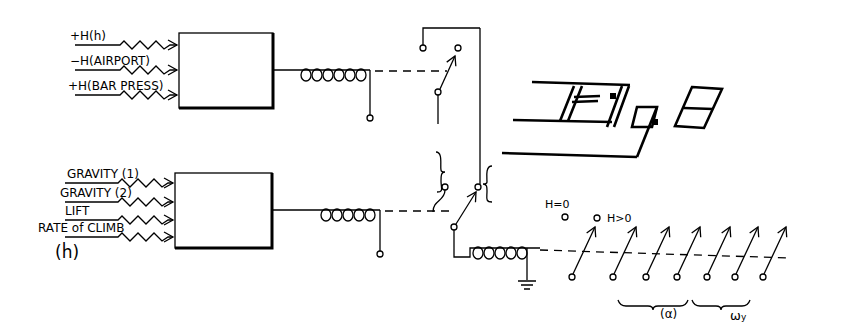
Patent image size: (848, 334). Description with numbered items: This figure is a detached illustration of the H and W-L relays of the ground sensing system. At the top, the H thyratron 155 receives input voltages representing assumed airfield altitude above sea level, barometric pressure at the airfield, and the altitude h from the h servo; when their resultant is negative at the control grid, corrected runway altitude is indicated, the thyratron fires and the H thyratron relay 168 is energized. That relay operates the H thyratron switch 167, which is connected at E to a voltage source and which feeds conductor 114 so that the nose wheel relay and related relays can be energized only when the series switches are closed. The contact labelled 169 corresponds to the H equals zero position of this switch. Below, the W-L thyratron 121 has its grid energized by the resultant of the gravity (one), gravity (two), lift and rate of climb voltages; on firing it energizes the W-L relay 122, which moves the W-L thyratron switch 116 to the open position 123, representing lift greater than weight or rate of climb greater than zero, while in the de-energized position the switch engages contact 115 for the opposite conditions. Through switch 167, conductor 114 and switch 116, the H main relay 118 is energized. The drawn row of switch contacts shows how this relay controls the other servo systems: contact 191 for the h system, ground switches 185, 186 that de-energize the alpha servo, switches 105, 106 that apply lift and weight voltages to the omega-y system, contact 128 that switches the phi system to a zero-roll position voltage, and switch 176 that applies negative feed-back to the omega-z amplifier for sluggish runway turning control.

The H thyratron 155 is at (269, 33).
The H thyratron relay 168 is at (359, 56).
The contact H=0 169 is at (422, 42).
The H thyratron switch 167 is at (444, 76).
The conductor 114 is at (481, 67).
The W-L thyratron 121 is at (250, 173).
The W-L relay 122 is at (368, 205).
The open position 123 is at (427, 193).
The contact 115 is at (475, 186).
The W-L thyratron switch 116 is at (462, 213).
The H main relay 118 is at (504, 245).
The switch (h) 191 is at (583, 252).
The ground switch 185 is at (625, 262).
The ground switch 186 is at (659, 260).
The switch 105 is at (694, 260).
The switch 106 is at (722, 260).
The contact 128 is at (746, 252).
The switch 176 is at (772, 259).